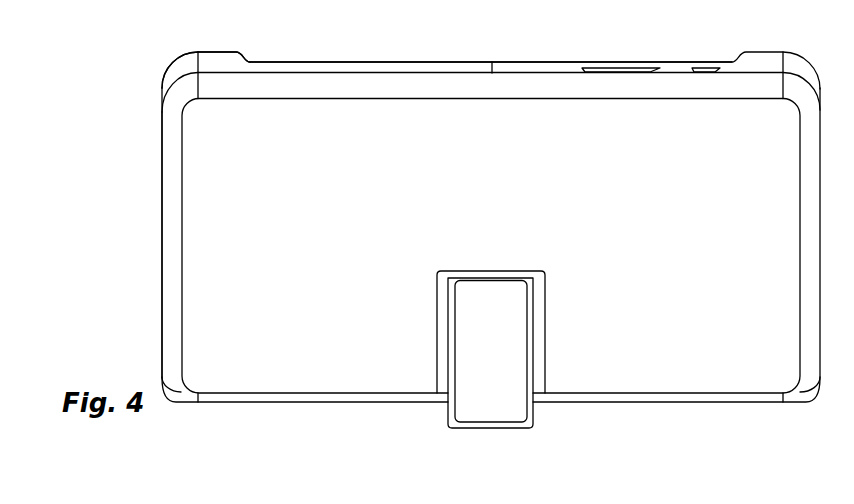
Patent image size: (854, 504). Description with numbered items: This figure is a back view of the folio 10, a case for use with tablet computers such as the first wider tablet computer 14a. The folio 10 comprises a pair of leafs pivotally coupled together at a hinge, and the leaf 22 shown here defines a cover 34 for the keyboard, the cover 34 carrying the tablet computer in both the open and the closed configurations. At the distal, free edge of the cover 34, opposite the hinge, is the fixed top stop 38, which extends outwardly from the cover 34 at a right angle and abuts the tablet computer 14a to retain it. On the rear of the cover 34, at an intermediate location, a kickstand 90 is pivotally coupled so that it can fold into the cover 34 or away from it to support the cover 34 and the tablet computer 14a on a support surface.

The folio 10 is at (142, 262).
The first wider tablet computer 14a is at (442, 65).
The leaf 22 is at (162, 112).
The cover 34 is at (162, 175).
The fixed top stop 38 is at (216, 62).
The kickstand 90 is at (470, 395).